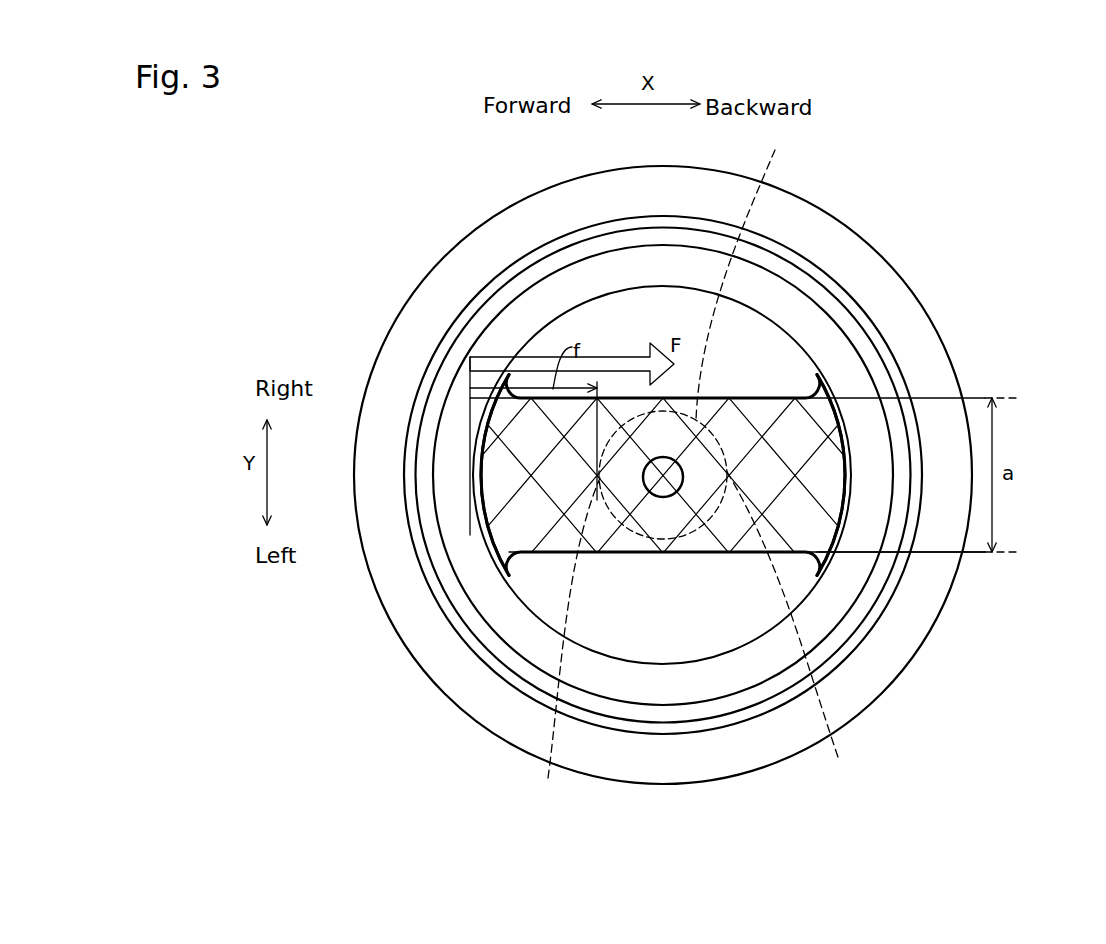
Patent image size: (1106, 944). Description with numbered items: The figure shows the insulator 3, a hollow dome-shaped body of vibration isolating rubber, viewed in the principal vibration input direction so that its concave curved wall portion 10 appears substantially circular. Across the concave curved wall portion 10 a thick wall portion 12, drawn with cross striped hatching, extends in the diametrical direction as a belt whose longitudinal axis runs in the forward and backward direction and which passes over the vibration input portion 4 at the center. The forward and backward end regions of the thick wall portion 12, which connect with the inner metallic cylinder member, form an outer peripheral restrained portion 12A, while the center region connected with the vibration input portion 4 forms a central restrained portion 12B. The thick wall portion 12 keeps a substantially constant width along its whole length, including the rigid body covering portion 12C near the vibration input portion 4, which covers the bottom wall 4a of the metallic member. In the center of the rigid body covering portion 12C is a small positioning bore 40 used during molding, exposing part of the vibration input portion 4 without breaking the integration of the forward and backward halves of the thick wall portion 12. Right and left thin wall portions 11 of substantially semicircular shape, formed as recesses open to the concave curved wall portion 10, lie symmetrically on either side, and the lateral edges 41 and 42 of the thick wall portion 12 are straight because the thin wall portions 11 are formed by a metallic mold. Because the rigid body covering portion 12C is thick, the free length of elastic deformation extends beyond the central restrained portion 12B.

The insulator 3 is at (452, 230).
The vibration input portion 4 is at (655, 628).
The bottom wall 4a is at (746, 274).
The concave curved wall portion 10 is at (515, 318).
The thin wall portions 11 is at (590, 330).
The thick wall portion 12 is at (765, 458).
The outer peripheral restrained portion 12A is at (487, 470).
The central restrained portion 12B is at (695, 642).
The rigid body covering portion 12C is at (630, 500).
The positioning bore 40 is at (662, 487).
The lateral edge 41 is at (758, 385).
The lateral edge 42 is at (751, 553).